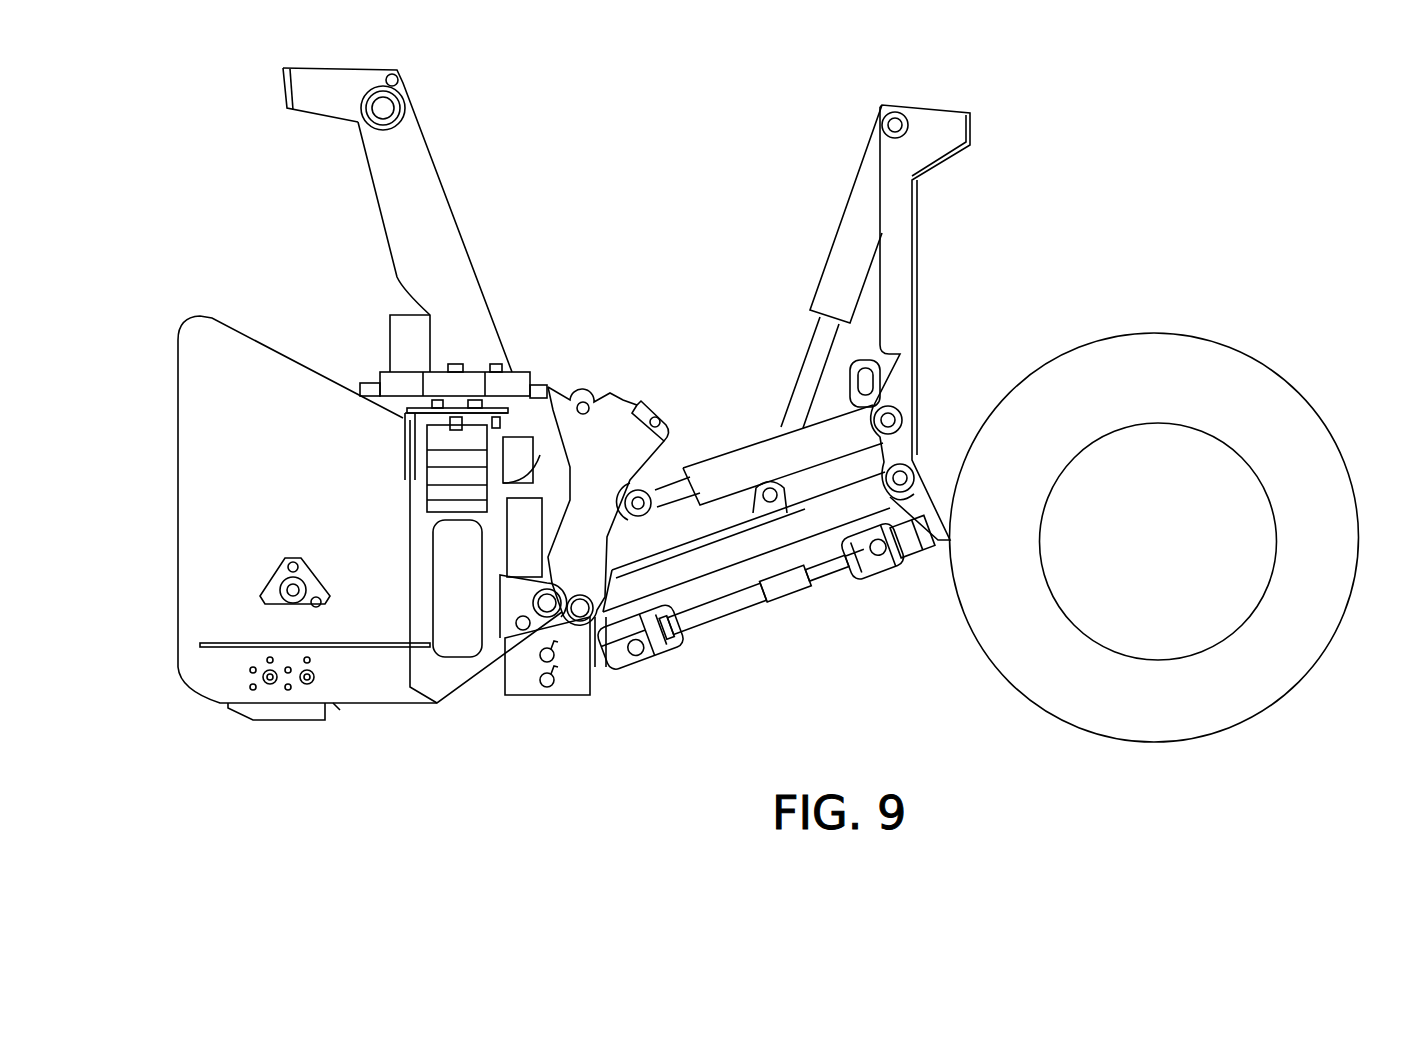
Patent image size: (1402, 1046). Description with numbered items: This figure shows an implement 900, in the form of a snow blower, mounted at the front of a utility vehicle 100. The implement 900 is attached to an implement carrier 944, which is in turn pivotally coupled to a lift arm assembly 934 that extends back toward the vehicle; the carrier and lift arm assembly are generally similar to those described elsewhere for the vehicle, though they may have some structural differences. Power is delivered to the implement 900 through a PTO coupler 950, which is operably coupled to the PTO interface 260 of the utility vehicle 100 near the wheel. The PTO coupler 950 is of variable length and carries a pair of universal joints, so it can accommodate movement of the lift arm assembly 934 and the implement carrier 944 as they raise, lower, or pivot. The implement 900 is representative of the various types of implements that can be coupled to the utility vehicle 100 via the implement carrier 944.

The implement 900 is at (536, 243).
The implement carrier 944 is at (621, 400).
The lift arm assembly 934 is at (756, 311).
The PTO coupler 950 is at (785, 580).
The PTO interface 260 is at (938, 550).
The utility vehicle 100 is at (1268, 323).